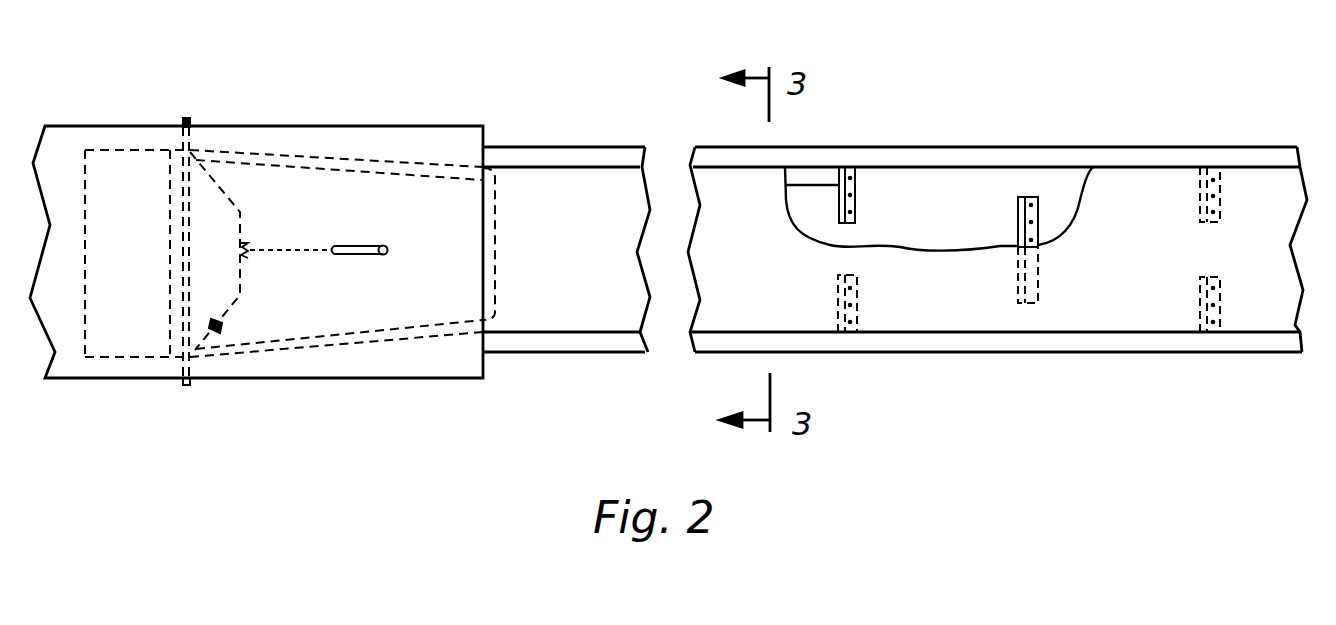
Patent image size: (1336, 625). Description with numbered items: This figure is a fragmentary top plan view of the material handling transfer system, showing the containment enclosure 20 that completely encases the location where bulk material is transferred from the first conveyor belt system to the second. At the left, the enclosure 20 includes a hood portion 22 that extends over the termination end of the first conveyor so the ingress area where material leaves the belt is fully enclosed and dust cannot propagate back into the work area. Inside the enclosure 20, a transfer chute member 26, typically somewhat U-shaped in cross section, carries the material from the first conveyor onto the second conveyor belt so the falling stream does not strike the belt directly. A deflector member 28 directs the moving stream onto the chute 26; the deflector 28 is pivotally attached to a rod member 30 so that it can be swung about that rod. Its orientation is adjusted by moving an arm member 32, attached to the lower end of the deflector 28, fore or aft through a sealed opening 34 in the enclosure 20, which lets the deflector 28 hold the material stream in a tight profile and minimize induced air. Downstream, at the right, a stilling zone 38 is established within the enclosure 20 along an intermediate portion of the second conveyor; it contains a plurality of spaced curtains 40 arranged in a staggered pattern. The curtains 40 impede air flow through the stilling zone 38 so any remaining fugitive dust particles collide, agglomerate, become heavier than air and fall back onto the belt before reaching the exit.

The containment enclosure 20 is at (386, 112).
The hood portion 22 is at (127, 126).
The transfer chute member 26 is at (350, 332).
The deflector member 28 is at (228, 355).
The rod member 30 is at (190, 118).
The arm member 32 is at (356, 254).
The sealed opening 34 is at (330, 248).
The stilling zone 38 is at (975, 132).
The spaced curtains 40 is at (785, 185).